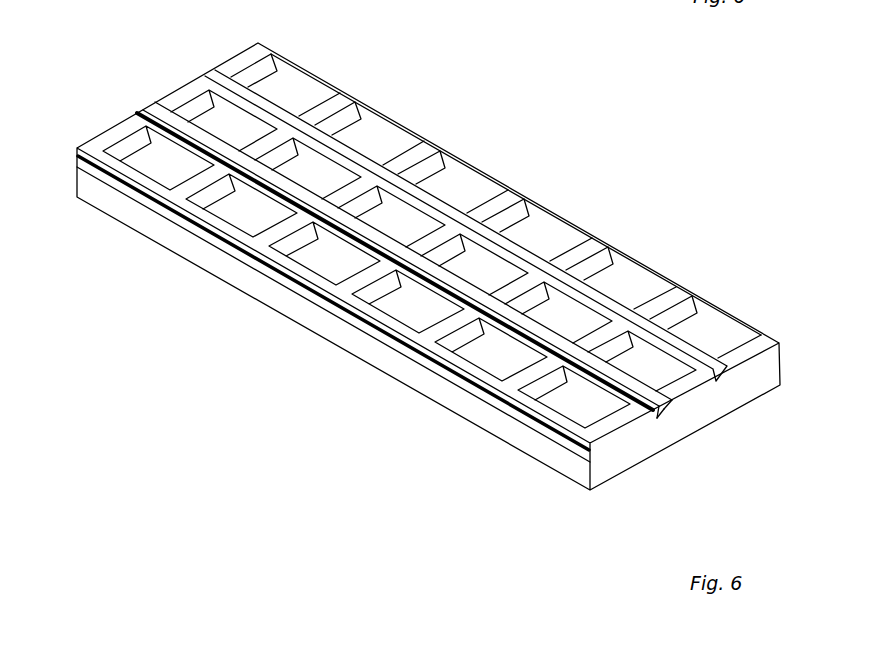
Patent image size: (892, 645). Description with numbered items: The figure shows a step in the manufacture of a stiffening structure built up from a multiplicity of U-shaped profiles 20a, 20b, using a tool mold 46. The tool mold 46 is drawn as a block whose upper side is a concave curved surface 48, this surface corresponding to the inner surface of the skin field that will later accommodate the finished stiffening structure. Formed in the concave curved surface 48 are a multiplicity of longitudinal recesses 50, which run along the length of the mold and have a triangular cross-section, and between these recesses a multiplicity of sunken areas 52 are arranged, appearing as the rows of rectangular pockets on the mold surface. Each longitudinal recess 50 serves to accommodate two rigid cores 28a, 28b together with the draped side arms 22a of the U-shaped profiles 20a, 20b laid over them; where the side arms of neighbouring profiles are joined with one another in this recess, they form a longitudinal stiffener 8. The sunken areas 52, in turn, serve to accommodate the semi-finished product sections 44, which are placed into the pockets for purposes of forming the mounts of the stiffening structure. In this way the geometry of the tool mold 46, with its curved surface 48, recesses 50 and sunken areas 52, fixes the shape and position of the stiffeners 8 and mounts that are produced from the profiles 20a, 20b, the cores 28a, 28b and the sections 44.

The tool mold 46 is at (466, 430).
The side arm 22a is at (562, 442).
The U-shaped profile 20b is at (104, 124).
The U-shaped profile 20a is at (168, 86).
The semi-finished product section 44 is at (545, 293).
The rigid core 28a is at (647, 422).
The longitudinal stiffener 8 is at (656, 421).
The rigid core 28b is at (669, 420).
The concave curved surface 48 is at (483, 189).
The sunken area 52 is at (675, 312).
The longitudinal recess 50 is at (705, 357).